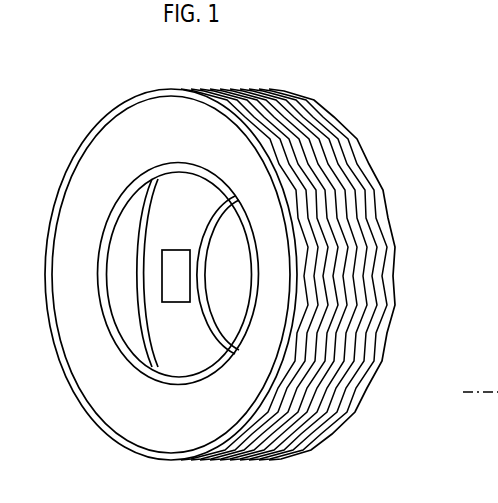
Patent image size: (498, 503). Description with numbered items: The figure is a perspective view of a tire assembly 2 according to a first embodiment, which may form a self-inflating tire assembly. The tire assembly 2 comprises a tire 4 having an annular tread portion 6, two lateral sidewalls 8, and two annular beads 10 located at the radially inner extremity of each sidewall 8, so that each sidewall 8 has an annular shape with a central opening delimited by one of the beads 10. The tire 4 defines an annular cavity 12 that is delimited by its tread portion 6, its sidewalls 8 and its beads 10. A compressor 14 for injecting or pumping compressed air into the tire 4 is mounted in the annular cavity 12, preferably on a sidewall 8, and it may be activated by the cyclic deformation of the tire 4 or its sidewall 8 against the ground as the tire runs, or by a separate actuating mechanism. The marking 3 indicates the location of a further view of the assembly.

The tire assembly 2 is at (119, 88).
The section line for FIG. 3 is at (497, 217).
The tire 4 is at (348, 150).
The tread portion 6 is at (340, 402).
The sidewall 8 is at (190, 327).
The bead 10 is at (243, 207).
The annular cavity 12 is at (125, 279).
The compressor 14 is at (173, 277).